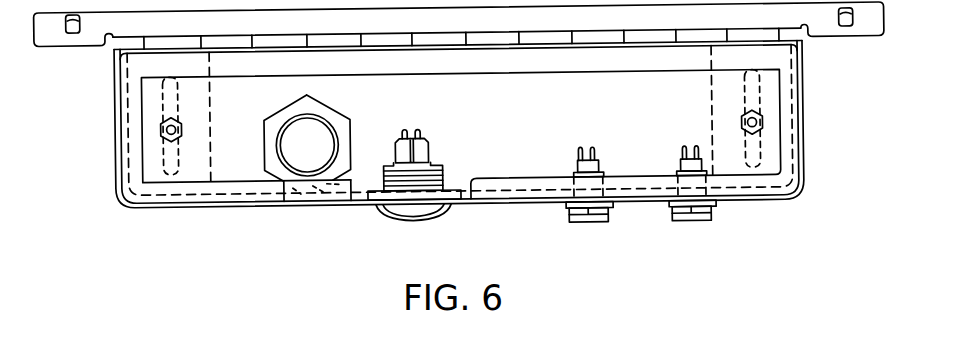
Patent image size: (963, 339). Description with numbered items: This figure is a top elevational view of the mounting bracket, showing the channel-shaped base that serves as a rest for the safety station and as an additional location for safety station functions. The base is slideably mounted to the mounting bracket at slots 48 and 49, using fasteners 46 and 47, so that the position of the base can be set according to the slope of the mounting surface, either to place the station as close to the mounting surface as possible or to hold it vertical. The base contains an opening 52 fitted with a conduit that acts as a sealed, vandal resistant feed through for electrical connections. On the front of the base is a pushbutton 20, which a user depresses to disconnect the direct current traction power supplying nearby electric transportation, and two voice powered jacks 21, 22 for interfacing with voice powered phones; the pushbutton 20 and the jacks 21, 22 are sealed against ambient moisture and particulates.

The pushbutton 20 is at (377, 219).
The voice powered jack 21 is at (590, 224).
The voice powered jack 22 is at (697, 224).
The fastener 46 is at (764, 129).
The fastener 47 is at (159, 128).
The slot 48 is at (177, 163).
The slot 49 is at (761, 160).
The opening 52 is at (303, 153).